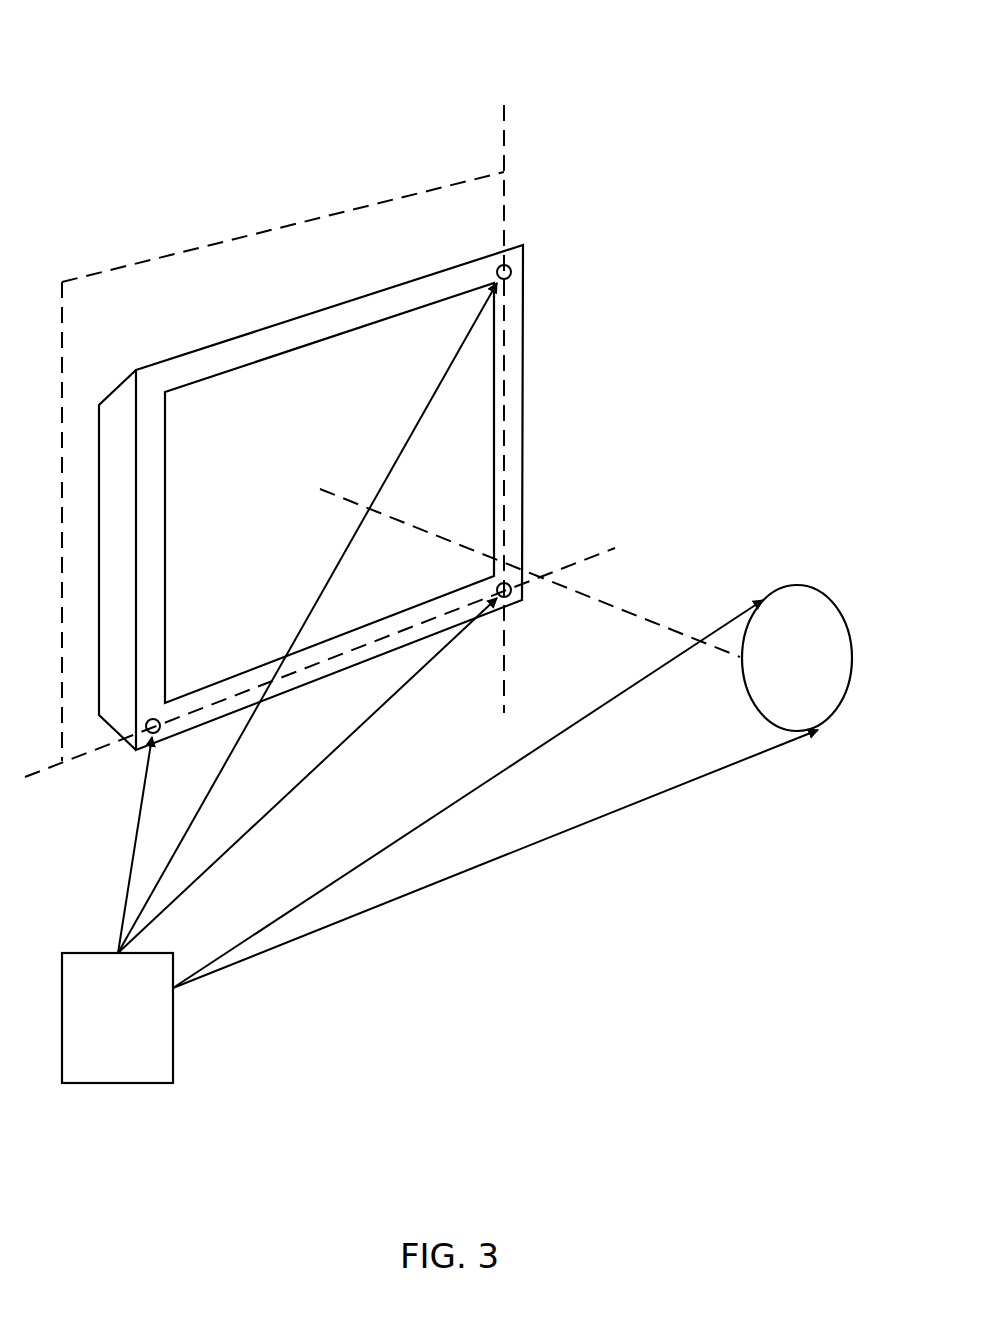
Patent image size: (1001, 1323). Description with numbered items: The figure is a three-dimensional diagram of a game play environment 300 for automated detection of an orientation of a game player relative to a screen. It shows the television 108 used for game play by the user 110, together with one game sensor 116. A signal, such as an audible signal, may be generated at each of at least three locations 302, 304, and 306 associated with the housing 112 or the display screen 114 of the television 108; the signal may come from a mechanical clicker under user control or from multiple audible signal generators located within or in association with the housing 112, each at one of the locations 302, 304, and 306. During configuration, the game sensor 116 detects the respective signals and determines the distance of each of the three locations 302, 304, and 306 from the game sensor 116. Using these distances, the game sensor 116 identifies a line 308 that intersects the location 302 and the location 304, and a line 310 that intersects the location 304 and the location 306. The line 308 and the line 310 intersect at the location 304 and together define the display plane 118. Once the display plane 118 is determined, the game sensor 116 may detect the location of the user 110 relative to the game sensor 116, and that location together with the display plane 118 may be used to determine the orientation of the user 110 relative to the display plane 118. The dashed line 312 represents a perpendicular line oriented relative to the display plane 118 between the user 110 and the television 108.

The game play environment 300 is at (65, 38).
The television 108 is at (328, 308).
The user 110 is at (842, 612).
The housing 112 is at (265, 347).
The display screen 114 is at (358, 410).
The game sensor 116 is at (138, 1028).
The display plane 118 is at (158, 253).
The first location 302 is at (510, 270).
The second location 304 is at (522, 600).
The third location 306 is at (148, 721).
The line 308 is at (505, 198).
The line 310 is at (593, 555).
The dashed line 312 is at (640, 613).